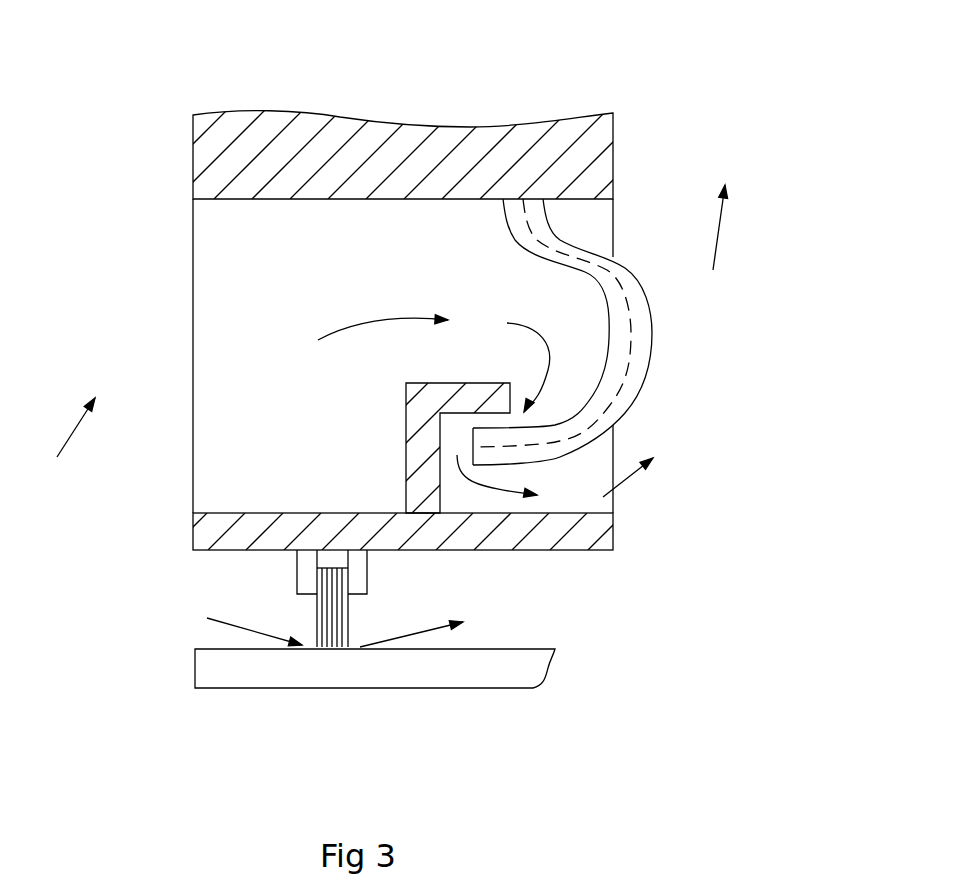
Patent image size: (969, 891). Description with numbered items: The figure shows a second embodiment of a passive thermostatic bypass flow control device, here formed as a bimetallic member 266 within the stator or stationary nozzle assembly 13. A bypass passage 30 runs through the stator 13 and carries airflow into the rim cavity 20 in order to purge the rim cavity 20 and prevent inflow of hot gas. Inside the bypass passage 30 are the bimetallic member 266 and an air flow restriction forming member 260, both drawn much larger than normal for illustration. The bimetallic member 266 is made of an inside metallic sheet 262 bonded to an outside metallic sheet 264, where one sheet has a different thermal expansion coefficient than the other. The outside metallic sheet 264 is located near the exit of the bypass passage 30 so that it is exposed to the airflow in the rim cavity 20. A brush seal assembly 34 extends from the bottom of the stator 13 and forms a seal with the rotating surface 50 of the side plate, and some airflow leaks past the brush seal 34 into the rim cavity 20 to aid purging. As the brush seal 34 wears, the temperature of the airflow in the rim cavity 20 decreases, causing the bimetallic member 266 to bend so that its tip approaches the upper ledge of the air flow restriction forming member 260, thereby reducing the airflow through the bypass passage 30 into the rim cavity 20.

The stationary nozzle assembly 13 is at (340, 137).
The bypass passage 30 is at (265, 232).
The air flow restriction forming member 260 is at (422, 442).
The inside metallic sheet 262 is at (602, 282).
The outside metallic sheet 264 is at (645, 343).
The bimetallic member 266 is at (650, 382).
The rim cavity 20 is at (486, 332).
The brush seal assembly 34 is at (317, 617).
The rotating surface 50 is at (213, 664).